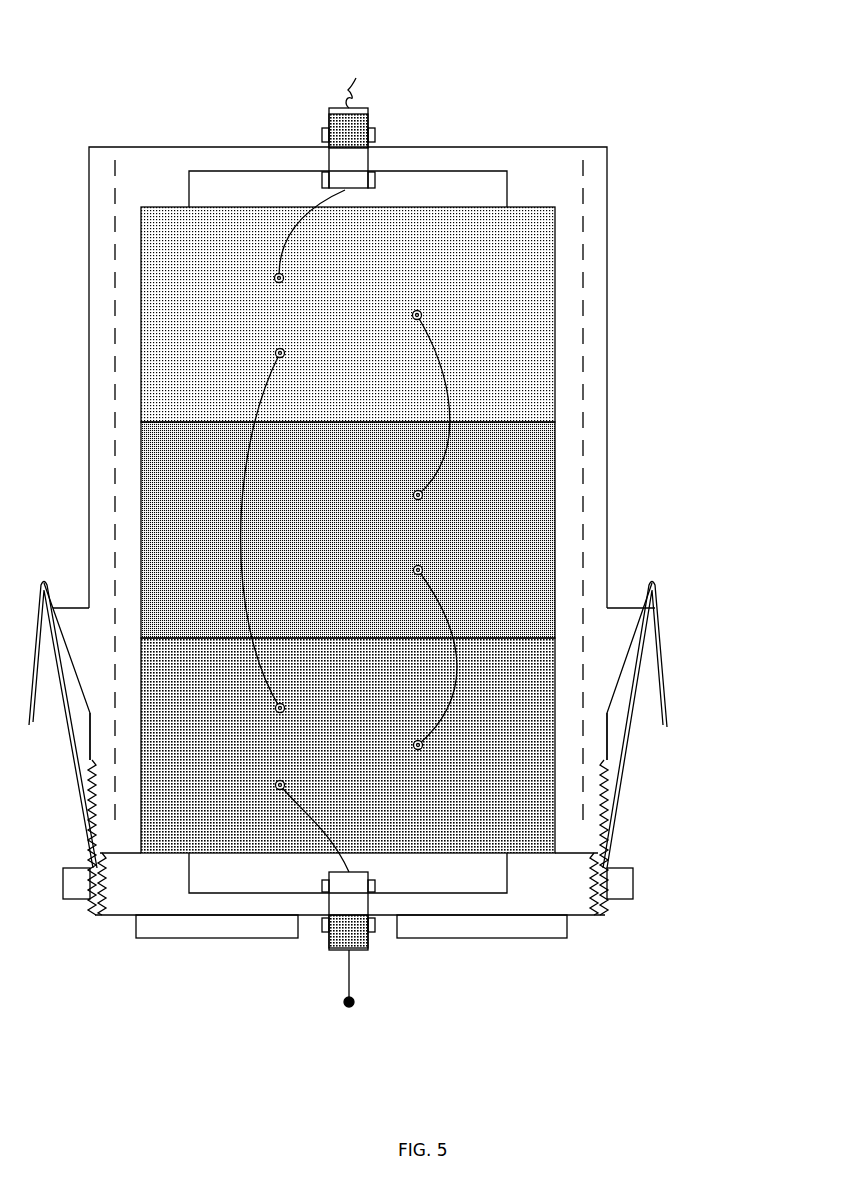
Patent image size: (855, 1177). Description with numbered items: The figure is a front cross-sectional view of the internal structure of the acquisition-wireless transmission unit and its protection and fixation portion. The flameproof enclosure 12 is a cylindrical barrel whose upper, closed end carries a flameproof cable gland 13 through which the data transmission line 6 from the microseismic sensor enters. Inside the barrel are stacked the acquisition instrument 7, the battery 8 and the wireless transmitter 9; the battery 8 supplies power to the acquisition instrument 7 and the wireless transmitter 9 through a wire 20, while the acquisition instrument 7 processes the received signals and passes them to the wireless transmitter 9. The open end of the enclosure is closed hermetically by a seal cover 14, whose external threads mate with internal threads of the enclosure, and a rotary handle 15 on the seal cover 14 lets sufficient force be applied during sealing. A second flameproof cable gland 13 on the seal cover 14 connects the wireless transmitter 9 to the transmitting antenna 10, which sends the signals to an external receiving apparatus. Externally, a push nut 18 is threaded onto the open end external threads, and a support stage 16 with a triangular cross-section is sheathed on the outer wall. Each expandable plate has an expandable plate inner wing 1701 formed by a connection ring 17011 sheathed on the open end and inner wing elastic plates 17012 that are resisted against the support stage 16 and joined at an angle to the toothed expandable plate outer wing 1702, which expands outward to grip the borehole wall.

The data transmission line 6 is at (352, 88).
The flameproof cable gland 13 is at (352, 142).
The acquisition instrument 7 is at (557, 213).
The flameproof enclosure 12 is at (593, 325).
The battery 8 is at (557, 452).
The wire 20 is at (425, 467).
The support stage 16 is at (622, 624).
The wireless transmitter 9 is at (583, 676).
The expandable plate outer wing 1702 is at (667, 698).
The inner wing elastic plate 17012 is at (628, 750).
The expandable plate inner wing 1701 is at (655, 765).
The connection ring 17011 is at (612, 850).
The push nut 18 is at (615, 878).
The rotary handle 15 is at (453, 935).
The transmitting antenna 10 is at (353, 995).
The seal cover 14 is at (298, 905).